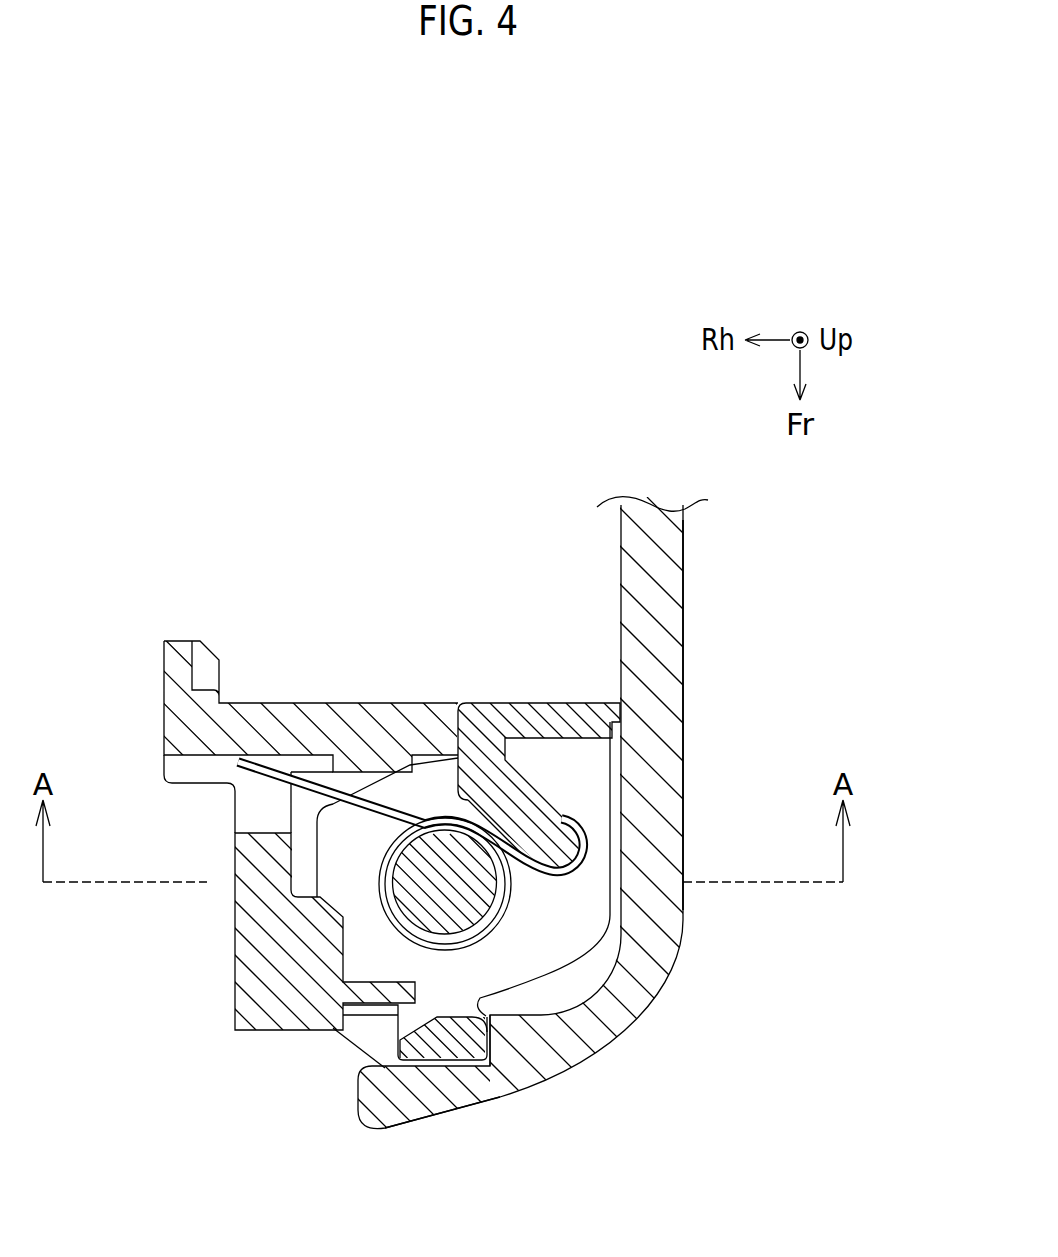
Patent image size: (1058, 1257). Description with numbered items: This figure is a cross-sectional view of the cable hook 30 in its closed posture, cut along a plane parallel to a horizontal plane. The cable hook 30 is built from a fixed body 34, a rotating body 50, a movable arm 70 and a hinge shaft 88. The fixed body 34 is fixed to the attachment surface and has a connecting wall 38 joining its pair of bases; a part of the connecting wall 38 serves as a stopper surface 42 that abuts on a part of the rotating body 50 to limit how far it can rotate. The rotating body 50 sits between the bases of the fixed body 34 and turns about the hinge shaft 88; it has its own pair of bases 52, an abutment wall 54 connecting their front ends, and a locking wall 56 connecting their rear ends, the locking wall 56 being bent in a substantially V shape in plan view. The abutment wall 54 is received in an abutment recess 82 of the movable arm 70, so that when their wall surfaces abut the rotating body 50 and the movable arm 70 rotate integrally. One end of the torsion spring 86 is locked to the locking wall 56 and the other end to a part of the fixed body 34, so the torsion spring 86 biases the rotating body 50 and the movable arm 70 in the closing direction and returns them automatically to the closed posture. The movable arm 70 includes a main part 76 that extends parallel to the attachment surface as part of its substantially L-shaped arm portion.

The cable hook 30 is at (458, 456).
The fixed body 34 is at (235, 812).
The connecting wall 38 is at (237, 902).
The stopper surface 42 is at (344, 790).
The rotating body 50 is at (617, 962).
The bases 52 is at (533, 926).
The abutment wall 54 is at (458, 1060).
The locking wall 56 is at (512, 810).
The movable arm 70 is at (684, 806).
The main part 76 is at (684, 710).
The abutment recess 82 is at (510, 1062).
The torsion spring 86 is at (407, 813).
The hinge shaft 88 is at (455, 870).